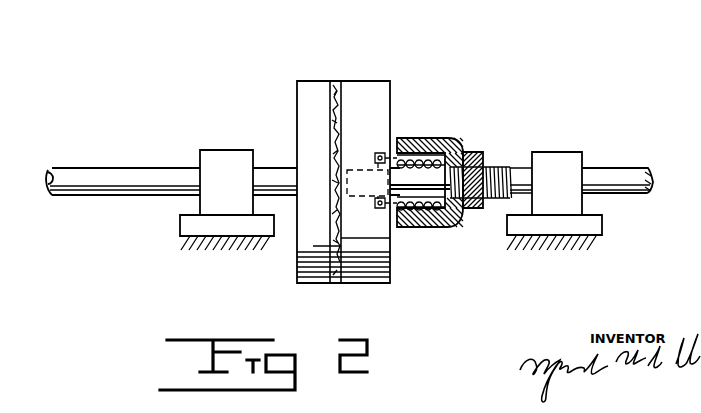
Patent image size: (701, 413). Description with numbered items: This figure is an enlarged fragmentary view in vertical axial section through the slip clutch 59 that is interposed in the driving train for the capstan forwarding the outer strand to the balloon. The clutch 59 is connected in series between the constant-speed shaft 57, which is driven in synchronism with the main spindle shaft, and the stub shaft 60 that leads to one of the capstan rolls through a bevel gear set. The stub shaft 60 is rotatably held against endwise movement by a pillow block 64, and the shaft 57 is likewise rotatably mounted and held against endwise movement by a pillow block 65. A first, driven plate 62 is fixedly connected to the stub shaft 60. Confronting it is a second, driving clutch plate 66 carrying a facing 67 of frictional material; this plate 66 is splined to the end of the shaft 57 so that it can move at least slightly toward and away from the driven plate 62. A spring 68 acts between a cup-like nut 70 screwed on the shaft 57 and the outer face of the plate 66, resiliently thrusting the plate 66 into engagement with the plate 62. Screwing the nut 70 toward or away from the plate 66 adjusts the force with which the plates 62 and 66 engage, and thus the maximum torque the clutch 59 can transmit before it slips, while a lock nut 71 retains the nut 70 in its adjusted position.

The shaft 57 is at (626, 180).
The clutch 59 is at (370, 60).
The stub shaft 60 is at (102, 200).
The driven plate 62 is at (311, 262).
The pillow block 64 is at (217, 150).
The pillow block 65 is at (572, 158).
The driving clutch plate 66 is at (378, 92).
The facing of frictional material 67 is at (337, 283).
The spring 68 is at (463, 150).
The cup-like nut 70 is at (434, 138).
The lock nut 71 is at (486, 156).